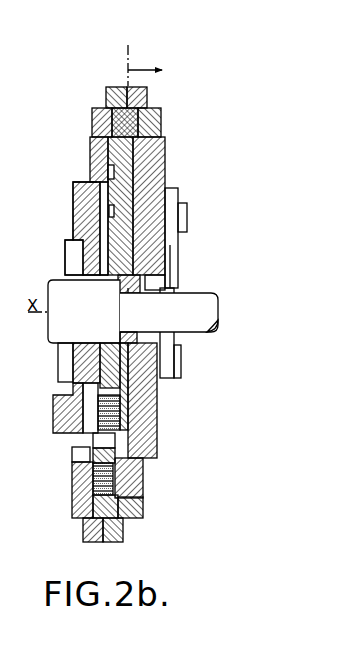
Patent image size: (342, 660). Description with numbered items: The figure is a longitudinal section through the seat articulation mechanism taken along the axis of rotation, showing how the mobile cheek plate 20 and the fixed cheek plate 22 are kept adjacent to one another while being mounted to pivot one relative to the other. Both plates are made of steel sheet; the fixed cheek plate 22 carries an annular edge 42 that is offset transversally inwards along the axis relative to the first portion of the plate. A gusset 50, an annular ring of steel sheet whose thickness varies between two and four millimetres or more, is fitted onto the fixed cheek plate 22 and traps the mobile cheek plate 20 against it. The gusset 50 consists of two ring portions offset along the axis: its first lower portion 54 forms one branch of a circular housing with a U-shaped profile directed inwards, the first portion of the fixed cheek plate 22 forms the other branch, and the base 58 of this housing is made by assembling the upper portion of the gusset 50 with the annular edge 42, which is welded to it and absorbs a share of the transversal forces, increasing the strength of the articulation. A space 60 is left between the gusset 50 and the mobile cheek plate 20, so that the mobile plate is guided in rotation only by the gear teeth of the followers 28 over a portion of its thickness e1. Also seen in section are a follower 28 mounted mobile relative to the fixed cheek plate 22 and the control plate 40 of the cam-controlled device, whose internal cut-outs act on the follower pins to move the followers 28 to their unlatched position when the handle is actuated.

The mobile cheek plate 20 is at (146, 448).
The fixed cheek plate 22 is at (82, 480).
The follower 28 is at (90, 155).
The control plate 40 is at (85, 248).
The annular edge 42 is at (110, 88).
The gusset 50 is at (161, 123).
The first lower portion 54 is at (160, 138).
The base 58 is at (135, 82).
The space 60 is at (146, 109).
The portion of thickness e1 is at (108, 133).